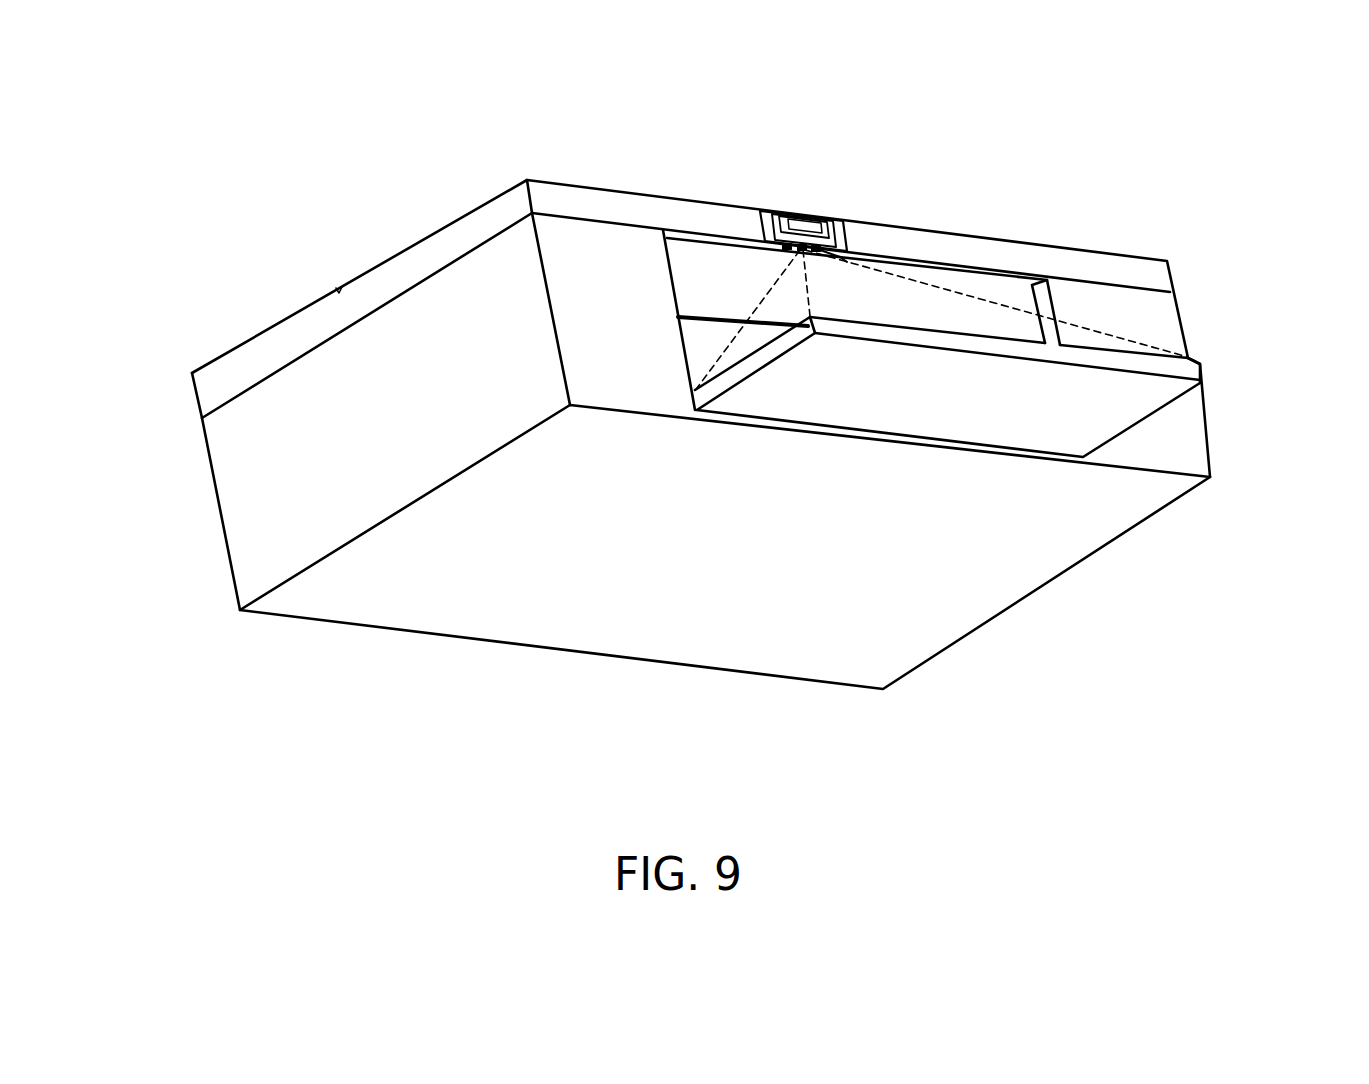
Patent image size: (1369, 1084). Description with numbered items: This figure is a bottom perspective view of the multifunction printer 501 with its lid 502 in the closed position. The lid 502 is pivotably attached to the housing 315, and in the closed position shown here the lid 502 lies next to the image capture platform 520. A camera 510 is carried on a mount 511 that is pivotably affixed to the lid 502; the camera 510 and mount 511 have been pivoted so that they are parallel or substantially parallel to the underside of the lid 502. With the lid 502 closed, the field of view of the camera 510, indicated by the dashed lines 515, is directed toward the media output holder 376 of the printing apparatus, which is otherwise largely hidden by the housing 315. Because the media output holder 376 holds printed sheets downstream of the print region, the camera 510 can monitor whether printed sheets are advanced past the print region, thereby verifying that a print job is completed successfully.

The multifunction printer 501 is at (206, 148).
The lid 502 is at (628, 190).
The camera 510 is at (821, 222).
The mount 511 is at (804, 222).
The dashed lines 515 is at (985, 298).
The image capture platform 520 is at (1182, 287).
The media output holder 376 is at (1193, 360).
The housing 315 is at (242, 497).